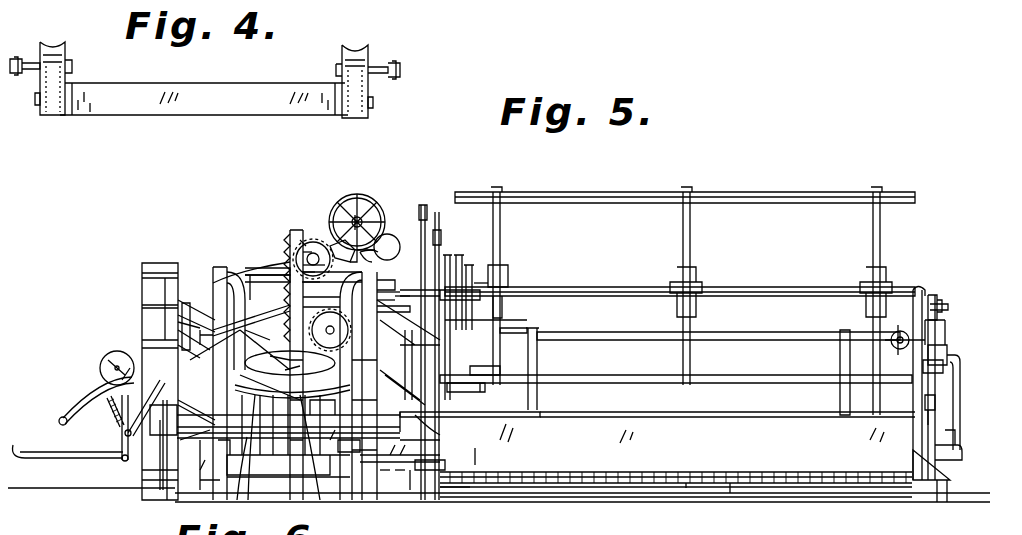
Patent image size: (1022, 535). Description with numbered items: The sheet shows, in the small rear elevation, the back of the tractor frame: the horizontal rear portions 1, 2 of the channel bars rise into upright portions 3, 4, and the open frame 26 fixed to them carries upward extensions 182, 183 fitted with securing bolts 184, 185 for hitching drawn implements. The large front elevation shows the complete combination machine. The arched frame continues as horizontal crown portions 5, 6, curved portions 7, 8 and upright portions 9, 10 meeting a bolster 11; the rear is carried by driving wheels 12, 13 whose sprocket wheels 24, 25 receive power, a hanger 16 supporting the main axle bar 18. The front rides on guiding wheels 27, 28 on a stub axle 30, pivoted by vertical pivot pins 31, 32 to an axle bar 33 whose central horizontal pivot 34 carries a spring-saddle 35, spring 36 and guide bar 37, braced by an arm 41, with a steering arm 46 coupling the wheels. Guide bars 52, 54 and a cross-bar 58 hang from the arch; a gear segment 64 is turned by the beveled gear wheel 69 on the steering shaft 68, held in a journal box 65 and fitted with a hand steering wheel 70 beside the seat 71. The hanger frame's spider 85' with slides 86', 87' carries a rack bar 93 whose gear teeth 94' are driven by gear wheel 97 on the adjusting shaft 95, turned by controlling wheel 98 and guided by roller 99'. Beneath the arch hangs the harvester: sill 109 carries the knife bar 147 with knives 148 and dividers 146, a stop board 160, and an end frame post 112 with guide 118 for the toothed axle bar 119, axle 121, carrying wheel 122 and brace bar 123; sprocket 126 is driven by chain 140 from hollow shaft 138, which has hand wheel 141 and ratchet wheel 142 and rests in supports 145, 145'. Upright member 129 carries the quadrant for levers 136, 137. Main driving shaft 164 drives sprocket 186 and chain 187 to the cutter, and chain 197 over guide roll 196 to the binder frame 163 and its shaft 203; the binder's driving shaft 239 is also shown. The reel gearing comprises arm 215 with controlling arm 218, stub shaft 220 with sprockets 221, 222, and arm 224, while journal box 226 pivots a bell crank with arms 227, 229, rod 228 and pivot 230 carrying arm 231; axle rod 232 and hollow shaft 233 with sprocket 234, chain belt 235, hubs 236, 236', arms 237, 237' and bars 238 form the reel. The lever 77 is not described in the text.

In FIG. 4, the horizontal rear portion 1 is at (370, 116).
In FIG. 4, the horizontal rear portion 2 is at (37, 108).
In FIG. 4, the upright portion 3 is at (356, 53).
In FIG. 5, the upright portion 3 is at (213, 305).
In FIG. 4, the upright portion 4 is at (53, 46).
In FIG. 5, the upright portion 4 is at (380, 302).
In FIG. 4, the open frame 26 is at (172, 110).
In FIG. 5, the open frame 26 is at (270, 416).
In FIG. 4, the upward extension 182 is at (362, 64).
In FIG. 4, the upward extension 183 is at (64, 58).
In FIG. 4, the securing bolt 184 is at (402, 70).
In FIG. 4, the securing bolt 185 is at (33, 60).
In FIG. 5, the horizontal crown portion 5 is at (226, 268).
In FIG. 5, the horizontal crown portion 6 is at (383, 278).
In FIG. 5, the curved portion 7 is at (213, 285).
In FIG. 5, the curved portion 8 is at (380, 292).
In FIG. 5, the upright portion 9 is at (255, 305).
In FIG. 5, the upright portion 10 is at (366, 312).
In FIG. 5, the bolster 11 is at (275, 430).
In FIG. 5, the driving wheel 12 is at (156, 262).
In FIG. 5, the driving wheel 13 is at (450, 490).
In FIG. 5, the hanger 16 is at (242, 445).
In FIG. 5, the main axle bar 18 is at (290, 440).
In FIG. 5, the sprocket wheel 24 is at (178, 328).
In FIG. 5, the sprocket wheel 25 is at (440, 435).
In FIG. 5, the guiding wheel 27 is at (165, 490).
In FIG. 5, the guiding wheel 28 is at (425, 472).
In FIG. 5, the stub axle 30 is at (420, 445).
In FIG. 5, the vertical pivot pin 31 is at (160, 455).
In FIG. 5, the vertical pivot pin 32 is at (480, 440).
In FIG. 5, the axle bar 33 is at (262, 440).
In FIG. 5, the central horizontal pivot 34 is at (306, 435).
In FIG. 5, the spring-saddle 35 is at (324, 440).
In FIG. 5, the spring 36 is at (350, 452).
In FIG. 5, the guide bar 37 is at (285, 457).
In FIG. 5, the arm 41 is at (222, 445).
In FIG. 5, the steering arm 46 is at (160, 440).
In FIG. 5, the guide bar 52 is at (186, 303).
In FIG. 5, the guide bar 54 is at (396, 300).
In FIG. 5, the cross-bar 58 is at (262, 275).
In FIG. 5, the gear segment 64 is at (312, 242).
In FIG. 5, the journal box 65 is at (340, 245).
In FIG. 5, the steering shaft 68 is at (356, 215).
In FIG. 5, the beveled gear wheel 69 is at (362, 226).
In FIG. 5, the hand steering wheel 70 is at (365, 196).
In FIG. 5, the seat 71 is at (390, 235).
In FIG. 5, the lever 77 is at (178, 313).
In FIG. 5, the spider or main member 85' is at (370, 502).
In FIG. 5, the slide 86' is at (395, 502).
In FIG. 5, the slide 87' is at (217, 466).
In FIG. 5, the rack bar 93 is at (300, 262).
In FIG. 5, the gear teeth 94' is at (263, 224).
In FIG. 5, the adjusting and supporting shaft 95 is at (290, 255).
In FIG. 5, the gear wheel 97 is at (290, 280).
In FIG. 5, the controlling wheel 98 is at (310, 240).
In FIG. 5, the guide roller 99' is at (260, 244).
In FIG. 5, the main bar or sill 109 is at (570, 495).
In FIG. 5, the post 112 is at (913, 406).
In FIG. 5, the guide 118 is at (936, 403).
In FIG. 5, the axle bar 119 is at (934, 418).
In FIG. 5, the axle 121 is at (958, 450).
In FIG. 5, the carrying wheel 122 is at (945, 493).
In FIG. 5, the brace bar 123 is at (958, 430).
In FIG. 5, the sprocket wheel 126 is at (922, 365).
In FIG. 5, the upright member 129 is at (386, 309).
In FIG. 5, the operating lever 136 is at (423, 205).
In FIG. 5, the lever 137 is at (437, 212).
In FIG. 5, the hollow shaft 138 is at (641, 332).
In FIG. 5, the sprocket chain 140 is at (900, 330).
In FIG. 5, the hand wheel 141 is at (480, 320).
In FIG. 5, the ratchet wheel 142 is at (528, 330).
In FIG. 5, the support 145 is at (676, 365).
In FIG. 5, the support 145' is at (822, 372).
In FIG. 5, the fingers or dividers 146 is at (686, 487).
In FIG. 5, the knife bar 147 is at (664, 472).
In FIG. 5, the knives 148 is at (733, 484).
In FIG. 5, the stop board 160 is at (734, 423).
In FIG. 5, the binder frame 163 is at (178, 344).
In FIG. 5, the main driving shaft 164 is at (272, 352).
In FIG. 5, the sprocket wheel 186 is at (178, 297).
In FIG. 5, the sprocket chain 187 is at (412, 490).
In FIG. 5, the guide roll 196 is at (333, 300).
In FIG. 5, the sprocket chain 197 is at (178, 320).
In FIG. 5, the shaft 203 is at (160, 352).
In FIG. 5, the arm 215 is at (478, 415).
In FIG. 5, the controlling arm 218 is at (462, 292).
In FIG. 5, the stub shaft 220 is at (478, 357).
In FIG. 5, the sprocket wheel 221 is at (452, 385).
In FIG. 5, the sprocket wheel 222 is at (480, 386).
In FIG. 5, the arm 224 is at (448, 262).
In FIG. 5, the journal box 226 is at (946, 328).
In FIG. 5, the arm 227 is at (941, 300).
In FIG. 5, the rod 228 is at (948, 307).
In FIG. 5, the arm 229 is at (948, 350).
In FIG. 5, the pivot 230 is at (958, 362).
In FIG. 5, the arm 231 is at (918, 290).
In FIG. 5, the axle rod 232 is at (935, 295).
In FIG. 5, the hollow shaft 233 is at (758, 286).
In FIG. 5, the sprocket wheel 234 is at (468, 264).
In FIG. 5, the chain belt 235 is at (478, 283).
In FIG. 5, the hub 236 is at (518, 288).
In FIG. 5, the hub 236' is at (861, 289).
In FIG. 5, the arm 237 is at (514, 286).
In FIG. 5, the arm 237' is at (859, 301).
In FIG. 5, the bar 238 is at (623, 193).
In FIG. 5, the driving shaft 239 is at (100, 368).